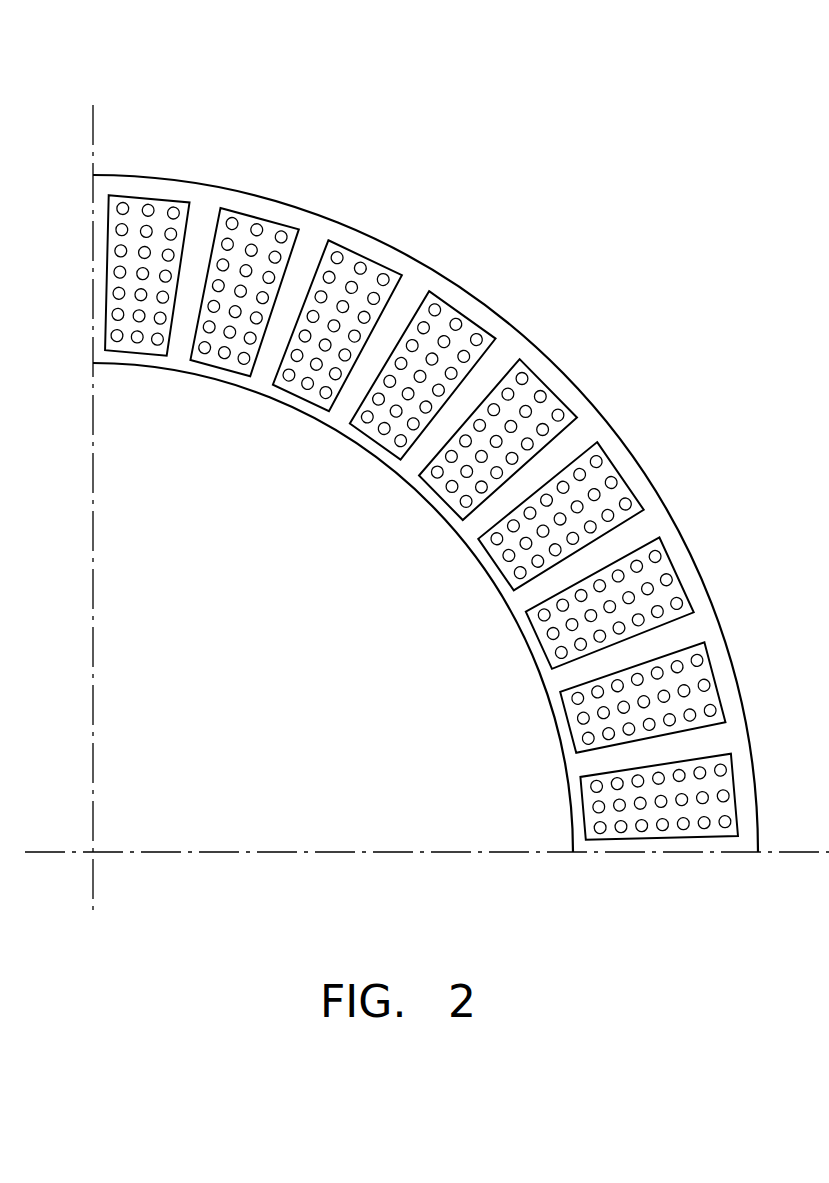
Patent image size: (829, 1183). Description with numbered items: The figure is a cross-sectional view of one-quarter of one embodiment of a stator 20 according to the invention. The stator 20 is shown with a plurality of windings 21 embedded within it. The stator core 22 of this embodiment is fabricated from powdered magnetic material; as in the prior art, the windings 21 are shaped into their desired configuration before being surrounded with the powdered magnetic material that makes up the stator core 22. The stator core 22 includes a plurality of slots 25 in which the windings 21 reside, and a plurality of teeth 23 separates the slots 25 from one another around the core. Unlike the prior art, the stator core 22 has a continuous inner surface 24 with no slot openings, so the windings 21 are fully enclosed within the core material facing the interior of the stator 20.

The stator 20 is at (646, 104).
The windings 21 is at (258, 228).
The stator core 22 is at (200, 222).
The teeth 23 is at (480, 387).
The inner surface 24 is at (313, 420).
The slots 25 is at (370, 255).